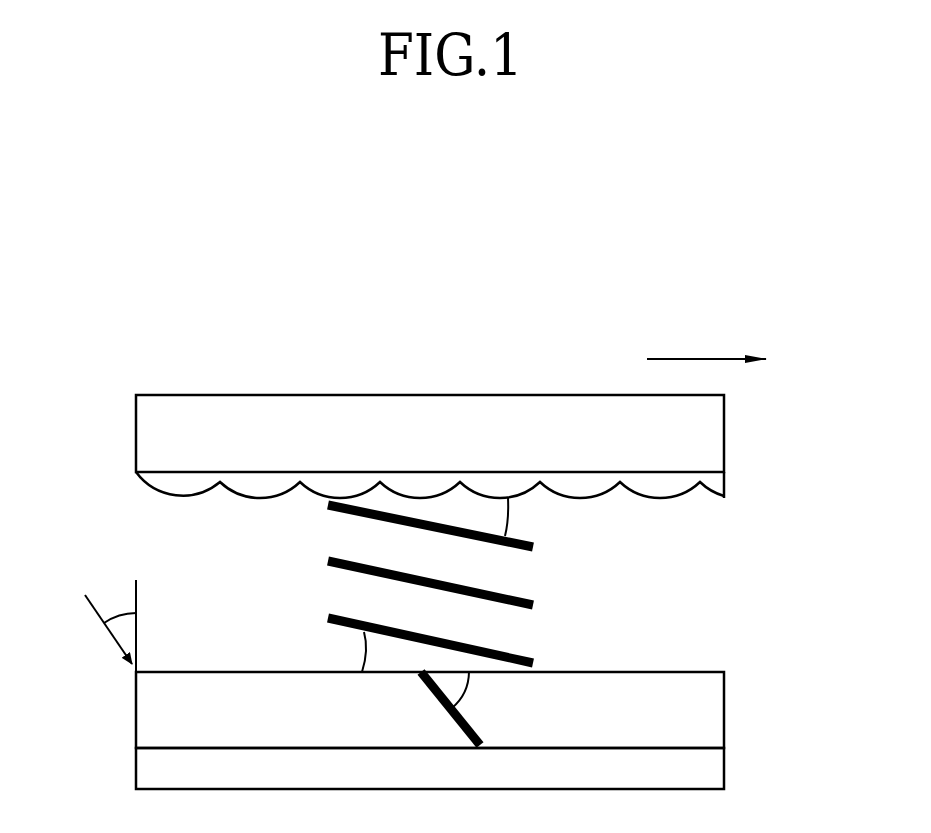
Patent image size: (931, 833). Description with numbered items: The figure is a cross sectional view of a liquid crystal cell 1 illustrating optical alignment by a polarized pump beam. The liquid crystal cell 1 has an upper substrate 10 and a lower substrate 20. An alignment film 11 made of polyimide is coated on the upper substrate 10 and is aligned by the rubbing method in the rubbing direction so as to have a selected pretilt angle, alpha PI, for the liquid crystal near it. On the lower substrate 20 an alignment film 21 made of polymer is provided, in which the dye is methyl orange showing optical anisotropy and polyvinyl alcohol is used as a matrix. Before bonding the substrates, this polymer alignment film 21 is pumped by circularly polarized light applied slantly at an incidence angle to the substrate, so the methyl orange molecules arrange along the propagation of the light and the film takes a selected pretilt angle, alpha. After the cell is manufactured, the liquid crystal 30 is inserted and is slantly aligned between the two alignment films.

The liquid crystal cell 1 is at (227, 372).
The upper substrate 10 is at (717, 430).
The alignment film 11 is at (717, 484).
The liquid crystal molecules 30 is at (533, 604).
The alignment film 21 is at (710, 704).
The lower substrate 20 is at (713, 769).